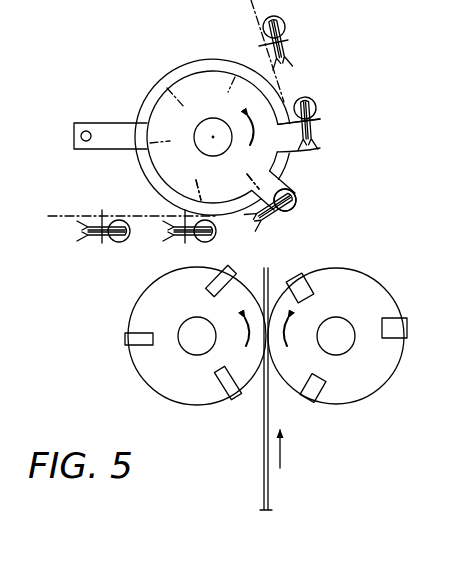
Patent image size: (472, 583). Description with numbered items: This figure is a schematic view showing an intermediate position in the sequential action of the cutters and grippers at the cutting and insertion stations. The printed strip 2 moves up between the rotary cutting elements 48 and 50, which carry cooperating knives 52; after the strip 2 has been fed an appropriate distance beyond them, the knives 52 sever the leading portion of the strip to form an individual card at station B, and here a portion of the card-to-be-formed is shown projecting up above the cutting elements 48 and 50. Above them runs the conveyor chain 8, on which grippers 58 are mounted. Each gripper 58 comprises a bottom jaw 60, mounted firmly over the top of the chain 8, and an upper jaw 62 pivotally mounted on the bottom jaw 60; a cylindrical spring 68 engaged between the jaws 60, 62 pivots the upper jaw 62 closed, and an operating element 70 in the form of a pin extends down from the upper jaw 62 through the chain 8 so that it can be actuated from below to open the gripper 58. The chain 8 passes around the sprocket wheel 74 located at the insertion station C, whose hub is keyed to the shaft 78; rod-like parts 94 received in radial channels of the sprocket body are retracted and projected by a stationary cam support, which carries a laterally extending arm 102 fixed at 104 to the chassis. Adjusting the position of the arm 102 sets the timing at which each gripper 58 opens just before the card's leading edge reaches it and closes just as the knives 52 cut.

The strip 2 is at (270, 497).
The chain 8 is at (249, 7).
The rotary cutting element 48 is at (187, 392).
The rotary cutting element 50 is at (368, 385).
The knives 52 is at (234, 396).
The gripper 58 is at (312, 194).
The bottom jaw 60 is at (276, 144).
The upper jaw 62 is at (316, 128).
The cylindrical spring 68 is at (290, 197).
The operating element 70 is at (262, 226).
The sprocket wheel 74 is at (175, 65).
The shaft 78 is at (222, 106).
The rod-like parts 94 is at (196, 190).
The arm 102 is at (112, 148).
The fixing point 104 is at (88, 132).
The station B is at (396, 282).
The insertion station C is at (300, 228).